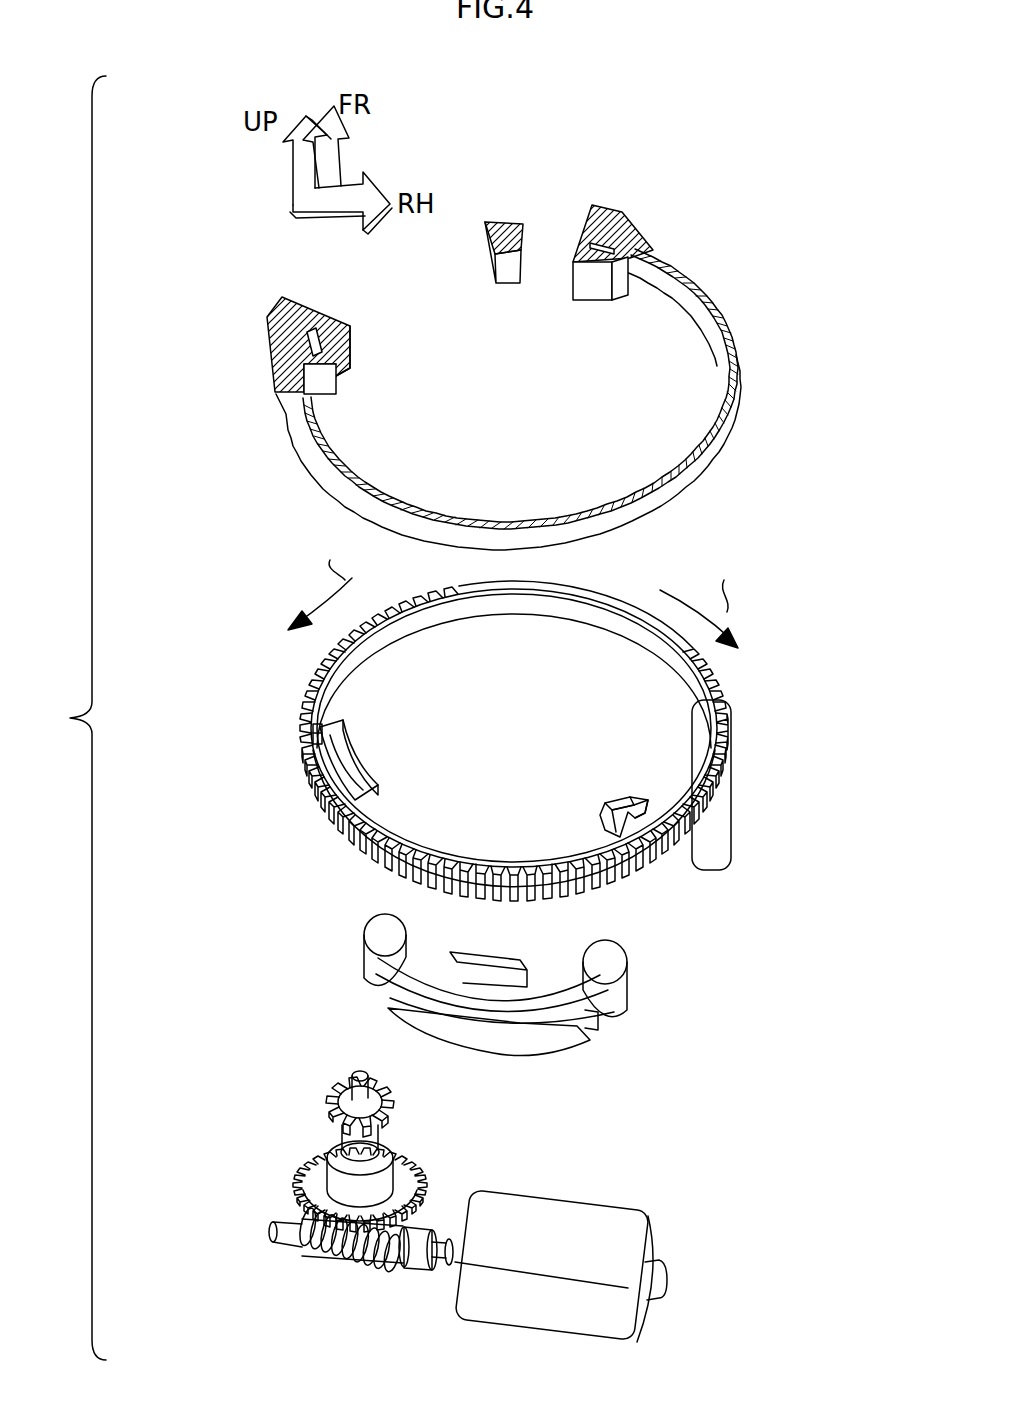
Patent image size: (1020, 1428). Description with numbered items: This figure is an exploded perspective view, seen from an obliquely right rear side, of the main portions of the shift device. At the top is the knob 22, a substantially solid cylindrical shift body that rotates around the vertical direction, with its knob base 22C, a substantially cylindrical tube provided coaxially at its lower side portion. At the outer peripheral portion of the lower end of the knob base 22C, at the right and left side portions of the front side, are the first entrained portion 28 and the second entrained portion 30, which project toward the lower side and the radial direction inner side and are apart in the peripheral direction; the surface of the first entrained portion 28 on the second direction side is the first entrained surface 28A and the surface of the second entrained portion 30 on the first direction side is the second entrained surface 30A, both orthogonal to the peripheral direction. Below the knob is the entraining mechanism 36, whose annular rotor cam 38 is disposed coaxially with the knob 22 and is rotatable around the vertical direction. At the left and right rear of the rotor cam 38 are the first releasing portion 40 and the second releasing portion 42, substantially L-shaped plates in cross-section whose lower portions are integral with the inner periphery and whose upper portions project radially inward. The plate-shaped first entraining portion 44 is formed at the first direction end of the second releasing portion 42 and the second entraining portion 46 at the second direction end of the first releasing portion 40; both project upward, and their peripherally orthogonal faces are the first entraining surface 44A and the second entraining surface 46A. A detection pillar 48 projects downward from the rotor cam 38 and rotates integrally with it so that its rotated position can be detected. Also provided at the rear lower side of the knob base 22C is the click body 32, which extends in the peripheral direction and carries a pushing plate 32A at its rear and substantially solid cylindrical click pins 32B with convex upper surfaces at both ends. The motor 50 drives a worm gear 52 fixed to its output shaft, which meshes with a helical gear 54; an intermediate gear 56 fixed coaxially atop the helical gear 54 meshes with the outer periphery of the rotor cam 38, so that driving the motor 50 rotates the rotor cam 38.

The knob 22 is at (281, 295).
The knob base 22C is at (722, 318).
The first entrained portion 28 is at (590, 293).
The first entrained surface 28A is at (620, 292).
The second entrained portion 30 is at (340, 362).
The second entrained surface 30A is at (320, 388).
The click body 32 is at (432, 962).
The pushing plate 32A is at (520, 1045).
The click pins 32B is at (370, 940).
The entraining mechanism 36 is at (205, 630).
The rotor cam 38 is at (632, 610).
The first releasing portion 40 is at (362, 748).
The second releasing portion 42 is at (600, 810).
The first entraining portion 44 is at (612, 800).
The first entraining surface 44A is at (648, 798).
The second entraining portion 46 is at (312, 740).
The second entraining surface 46A is at (316, 725).
The detection pillar 48 is at (733, 828).
The motor 50 is at (575, 1205).
The worm gear 52 is at (345, 1262).
The helical gear 54 is at (300, 1178).
The intermediate gear 56 is at (330, 1100).